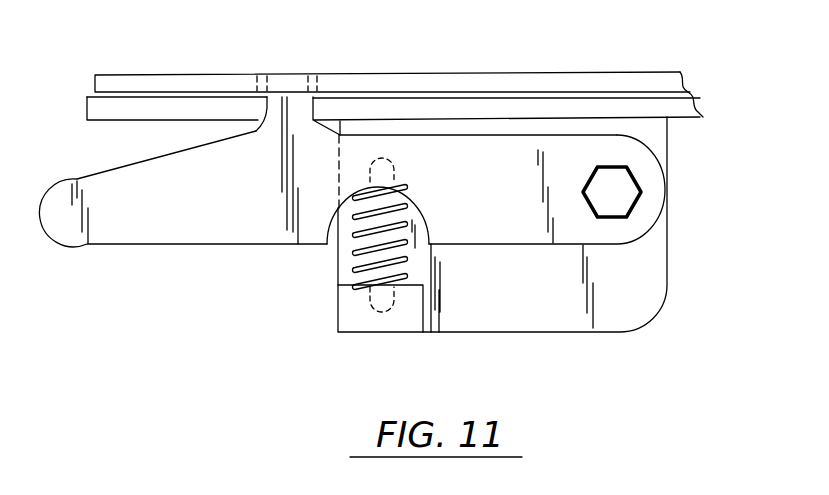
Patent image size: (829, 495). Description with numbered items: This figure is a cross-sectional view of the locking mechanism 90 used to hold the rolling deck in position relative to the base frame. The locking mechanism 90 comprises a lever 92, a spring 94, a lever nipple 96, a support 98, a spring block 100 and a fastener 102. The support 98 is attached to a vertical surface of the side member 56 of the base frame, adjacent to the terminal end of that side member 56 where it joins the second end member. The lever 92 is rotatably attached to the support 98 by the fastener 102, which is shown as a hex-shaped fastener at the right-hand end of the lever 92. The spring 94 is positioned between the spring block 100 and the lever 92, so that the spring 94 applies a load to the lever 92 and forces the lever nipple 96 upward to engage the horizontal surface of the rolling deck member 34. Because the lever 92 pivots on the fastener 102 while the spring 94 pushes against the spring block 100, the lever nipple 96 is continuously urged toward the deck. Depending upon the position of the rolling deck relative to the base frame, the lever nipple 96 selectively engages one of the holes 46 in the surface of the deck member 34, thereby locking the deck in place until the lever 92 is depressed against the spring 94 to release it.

The side member of rolling deck 34 is at (153, 74).
The holes 46 is at (318, 84).
The lever nipple 96 is at (290, 73).
The side member 56 is at (128, 122).
The locking mechanism 90 is at (395, 254).
The lever 92 is at (72, 245).
The spring 94 is at (358, 252).
The support 98 is at (464, 333).
The spring block 100 is at (372, 333).
The fastener 102 is at (637, 182).